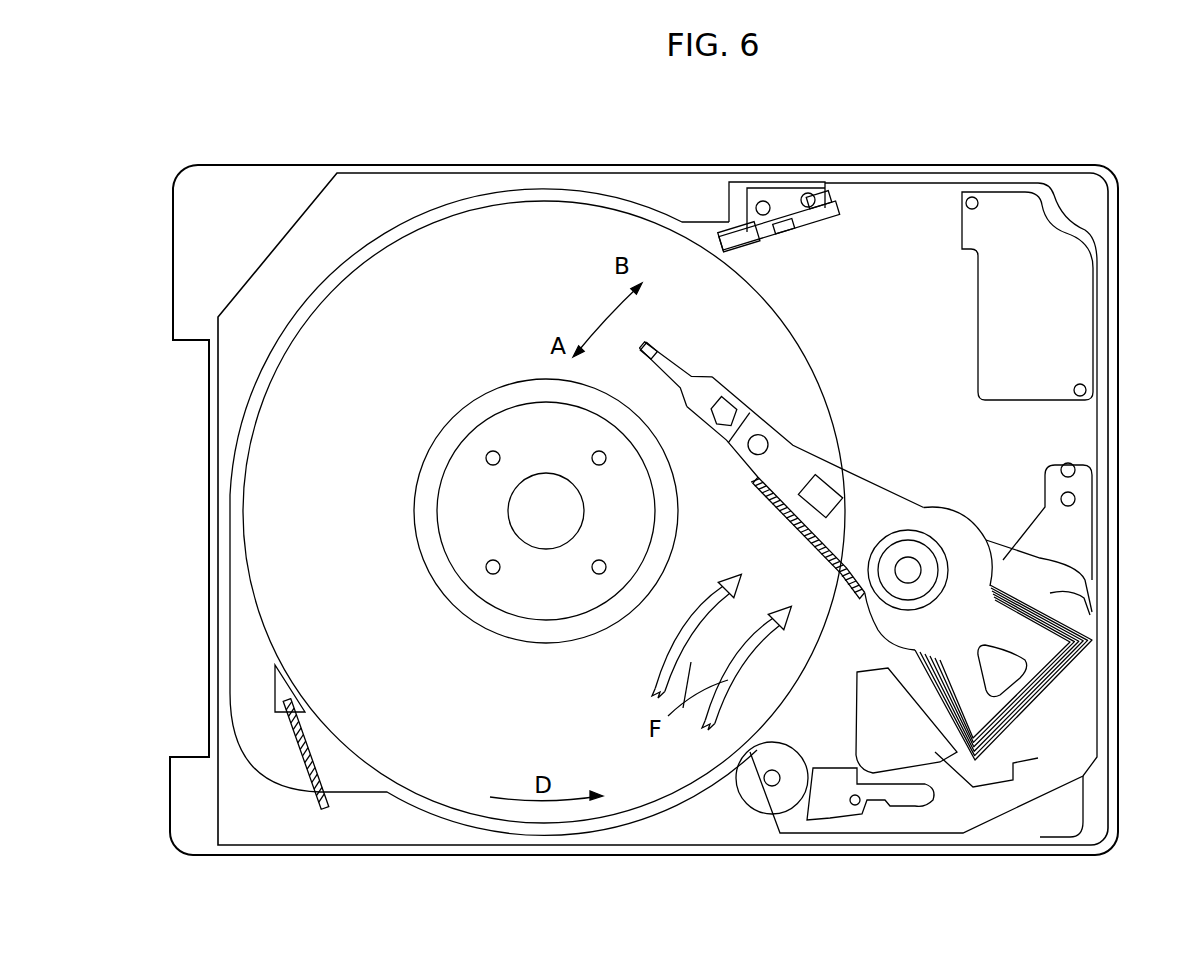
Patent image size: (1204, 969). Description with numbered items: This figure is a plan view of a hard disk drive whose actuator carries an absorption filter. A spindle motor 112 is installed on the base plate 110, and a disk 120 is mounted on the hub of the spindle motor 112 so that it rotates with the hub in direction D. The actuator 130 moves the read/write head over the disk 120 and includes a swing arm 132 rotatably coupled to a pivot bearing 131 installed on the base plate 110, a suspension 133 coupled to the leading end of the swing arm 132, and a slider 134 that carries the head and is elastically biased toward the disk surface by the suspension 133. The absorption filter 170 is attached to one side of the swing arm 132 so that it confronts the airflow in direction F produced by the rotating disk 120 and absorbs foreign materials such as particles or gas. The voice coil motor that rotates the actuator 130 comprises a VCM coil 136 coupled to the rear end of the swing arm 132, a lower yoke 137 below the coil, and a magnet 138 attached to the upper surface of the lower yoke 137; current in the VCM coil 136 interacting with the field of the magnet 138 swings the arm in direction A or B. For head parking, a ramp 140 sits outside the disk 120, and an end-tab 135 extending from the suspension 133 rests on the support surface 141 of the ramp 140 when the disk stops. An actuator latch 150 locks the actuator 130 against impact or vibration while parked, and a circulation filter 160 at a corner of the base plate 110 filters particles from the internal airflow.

The base plate 110 is at (683, 188).
The spindle motor 112 is at (465, 480).
The disk 120 is at (510, 222).
The actuator 130 is at (882, 470).
The pivot bearing 131 is at (912, 565).
The swing arm 132 is at (832, 472).
The suspension 133 is at (712, 388).
The slider 134 is at (665, 355).
The end-tab 135 is at (649, 343).
The VCM coil 136 is at (1028, 720).
The lower yoke 137 is at (1080, 692).
The magnet 138 is at (1065, 583).
The ramp 140 is at (758, 238).
The support surface 141 is at (768, 250).
The actuator latch 150 is at (867, 810).
The circulation filter 160 is at (297, 737).
The absorption filter 170 is at (785, 505).